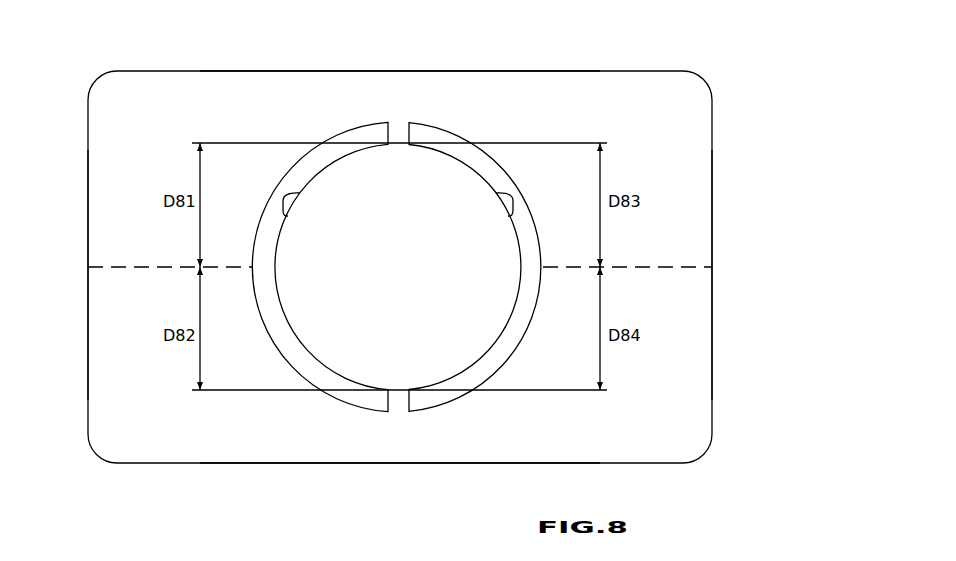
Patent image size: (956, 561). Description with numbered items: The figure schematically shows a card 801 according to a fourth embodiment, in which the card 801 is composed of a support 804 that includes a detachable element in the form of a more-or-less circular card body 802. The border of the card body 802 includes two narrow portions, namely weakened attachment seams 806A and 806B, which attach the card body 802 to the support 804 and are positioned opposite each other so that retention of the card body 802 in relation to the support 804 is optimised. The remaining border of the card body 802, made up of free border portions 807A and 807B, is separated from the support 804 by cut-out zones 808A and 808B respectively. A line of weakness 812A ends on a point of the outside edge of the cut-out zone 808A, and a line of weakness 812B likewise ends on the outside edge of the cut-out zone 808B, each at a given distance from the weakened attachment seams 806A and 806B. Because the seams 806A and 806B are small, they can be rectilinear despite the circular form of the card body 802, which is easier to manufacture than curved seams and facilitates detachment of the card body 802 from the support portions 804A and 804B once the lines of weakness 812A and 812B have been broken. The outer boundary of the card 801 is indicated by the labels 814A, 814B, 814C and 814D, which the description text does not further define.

The card 801 is at (717, 104).
The card body 802 is at (418, 302).
The support 804 is at (776, 193).
The support portion 804A is at (676, 183).
The support portion 804B is at (682, 317).
The weakened attachment seam 806A is at (398, 146).
The weakened attachment seam 806B is at (398, 390).
The free border portion 807A is at (508, 216).
The free border portion 807B is at (288, 216).
The cut-out zone 808A is at (425, 130).
The cut-out zone 808B is at (369, 130).
The line of weakness 812A is at (681, 267).
The line of weakness 812B is at (119, 267).
The right edge 814A is at (712, 380).
The left edge 814B is at (88, 403).
The bottom edge 814C is at (300, 463).
The top edge 814D is at (300, 71).